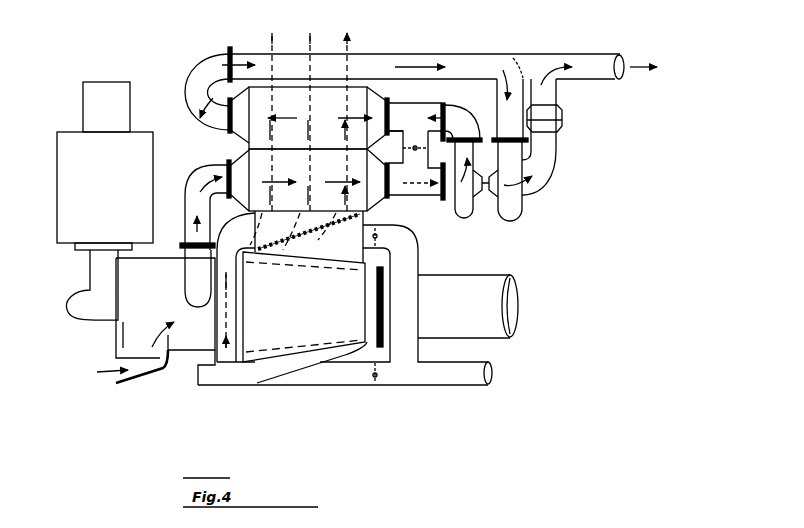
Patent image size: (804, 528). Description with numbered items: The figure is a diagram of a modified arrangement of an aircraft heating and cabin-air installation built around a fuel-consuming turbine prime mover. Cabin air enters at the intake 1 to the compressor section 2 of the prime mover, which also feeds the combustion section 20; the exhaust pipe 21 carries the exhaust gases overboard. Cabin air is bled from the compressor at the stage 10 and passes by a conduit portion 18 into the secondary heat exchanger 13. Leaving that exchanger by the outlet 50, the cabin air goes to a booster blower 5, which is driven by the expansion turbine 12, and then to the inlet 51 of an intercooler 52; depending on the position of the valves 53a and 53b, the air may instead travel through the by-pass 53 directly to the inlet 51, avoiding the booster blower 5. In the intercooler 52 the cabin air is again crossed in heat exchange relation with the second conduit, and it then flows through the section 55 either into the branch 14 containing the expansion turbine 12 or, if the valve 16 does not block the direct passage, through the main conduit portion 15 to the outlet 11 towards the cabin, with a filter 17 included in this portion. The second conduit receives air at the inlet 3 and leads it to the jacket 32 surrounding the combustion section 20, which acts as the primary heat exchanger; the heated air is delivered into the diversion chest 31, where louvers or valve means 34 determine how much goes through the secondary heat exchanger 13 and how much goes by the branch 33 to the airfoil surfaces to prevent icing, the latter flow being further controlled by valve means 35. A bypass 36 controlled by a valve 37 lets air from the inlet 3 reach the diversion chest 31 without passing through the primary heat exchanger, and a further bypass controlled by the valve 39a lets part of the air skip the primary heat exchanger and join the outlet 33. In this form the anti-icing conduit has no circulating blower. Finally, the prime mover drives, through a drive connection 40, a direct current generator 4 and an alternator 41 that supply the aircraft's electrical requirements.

The intake 1 is at (115, 363).
The compressor section 2 is at (165, 308).
The inlet 3 is at (232, 358).
The direct current generator 4 is at (105, 187).
The booster blower 5 is at (466, 218).
The bleed stage 10 is at (196, 303).
The outlet 11 is at (600, 80).
The expansion turbine 12 is at (515, 204).
The secondary heat exchanger 13 is at (317, 199).
The by-pass 14 is at (498, 118).
The main conduit portion 15 is at (538, 62).
The valve 16 is at (515, 62).
The filter 17 is at (562, 120).
The conduit portion 18 is at (197, 186).
The combustion section 20 is at (282, 350).
The exhaust pipe 21 is at (515, 326).
The diversion chest 31 is at (309, 237).
The jacket 32 is at (353, 322).
The branch 33 is at (412, 320).
The louvers or valve means 34 is at (298, 243).
The valve means 35 is at (419, 250).
The bypass 36 is at (228, 315).
The valve 37 is at (228, 347).
The valve 39a is at (378, 385).
The drive connection 40 is at (76, 308).
The alternator 41 is at (100, 87).
The outlet 50 is at (395, 193).
The inlet 51 is at (390, 108).
The intercooler 52 is at (278, 122).
The by-pass 53 is at (400, 147).
The valve 53a is at (413, 128).
The valve 53b is at (443, 201).
The section 55 is at (422, 52).